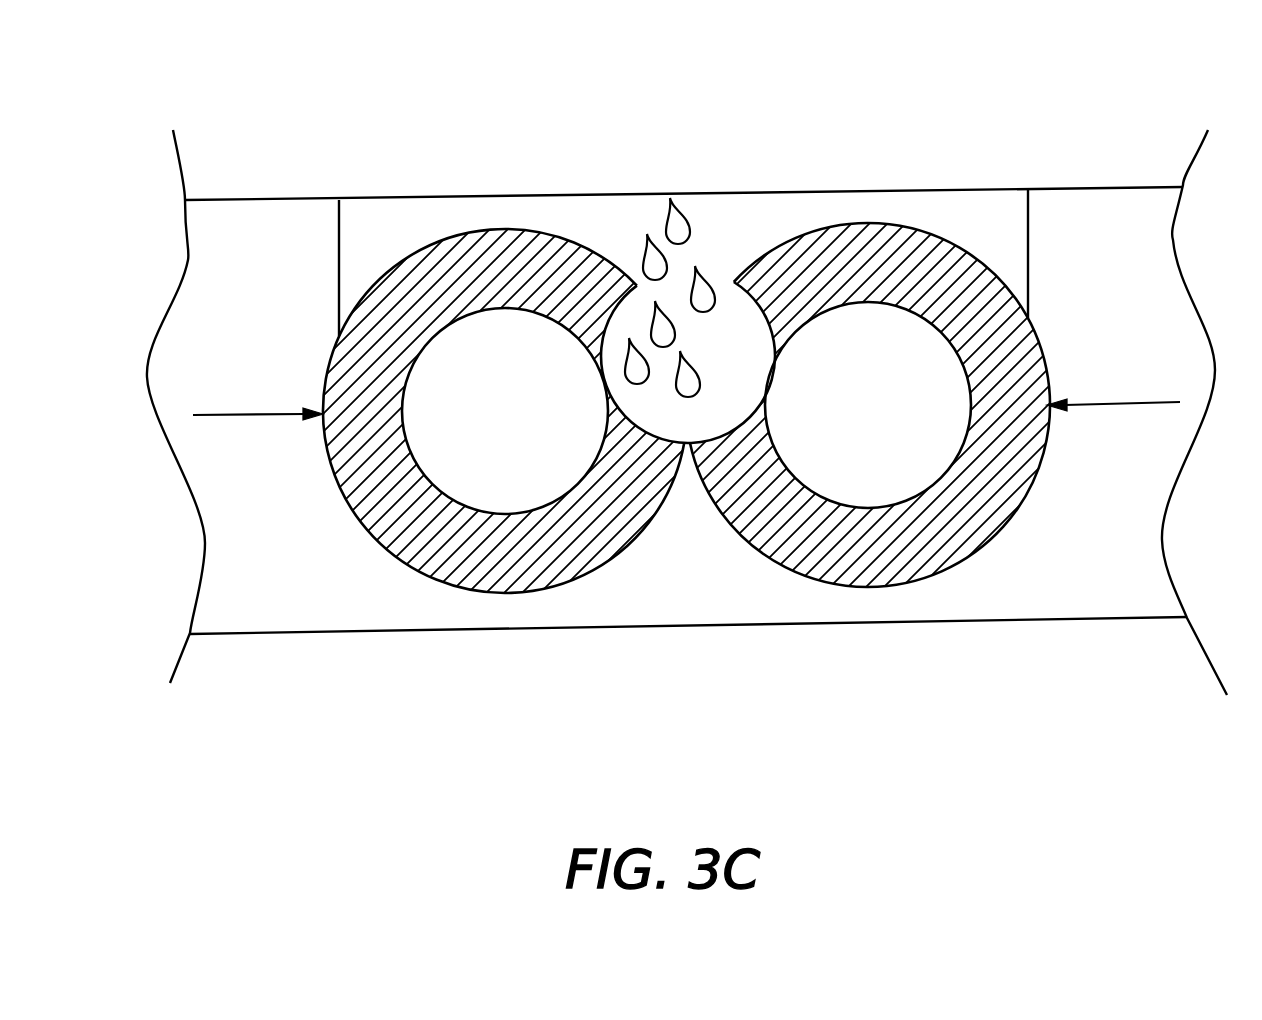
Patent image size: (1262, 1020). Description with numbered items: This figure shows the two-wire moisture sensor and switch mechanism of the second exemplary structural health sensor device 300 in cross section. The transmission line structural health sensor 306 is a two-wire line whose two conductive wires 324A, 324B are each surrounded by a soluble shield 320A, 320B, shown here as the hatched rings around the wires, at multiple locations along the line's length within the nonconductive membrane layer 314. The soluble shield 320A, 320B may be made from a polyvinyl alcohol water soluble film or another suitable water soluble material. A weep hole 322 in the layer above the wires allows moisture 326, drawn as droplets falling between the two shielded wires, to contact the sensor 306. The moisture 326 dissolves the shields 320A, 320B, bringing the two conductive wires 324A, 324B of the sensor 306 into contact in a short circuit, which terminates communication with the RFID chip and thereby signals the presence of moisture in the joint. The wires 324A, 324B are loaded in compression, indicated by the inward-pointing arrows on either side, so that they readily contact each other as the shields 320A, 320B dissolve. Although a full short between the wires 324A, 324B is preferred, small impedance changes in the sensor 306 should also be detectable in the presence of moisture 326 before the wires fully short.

The structural health sensor 300 is at (1125, 78).
The structural health sensor 306 is at (991, 584).
The nonconductive membrane layer 314 is at (923, 624).
The soluble shield 320A is at (497, 577).
The soluble shield 320B is at (878, 570).
The weep hole 322 is at (1000, 182).
The wire 324A is at (462, 455).
The wire 324B is at (833, 475).
The moisture 326 is at (714, 237).